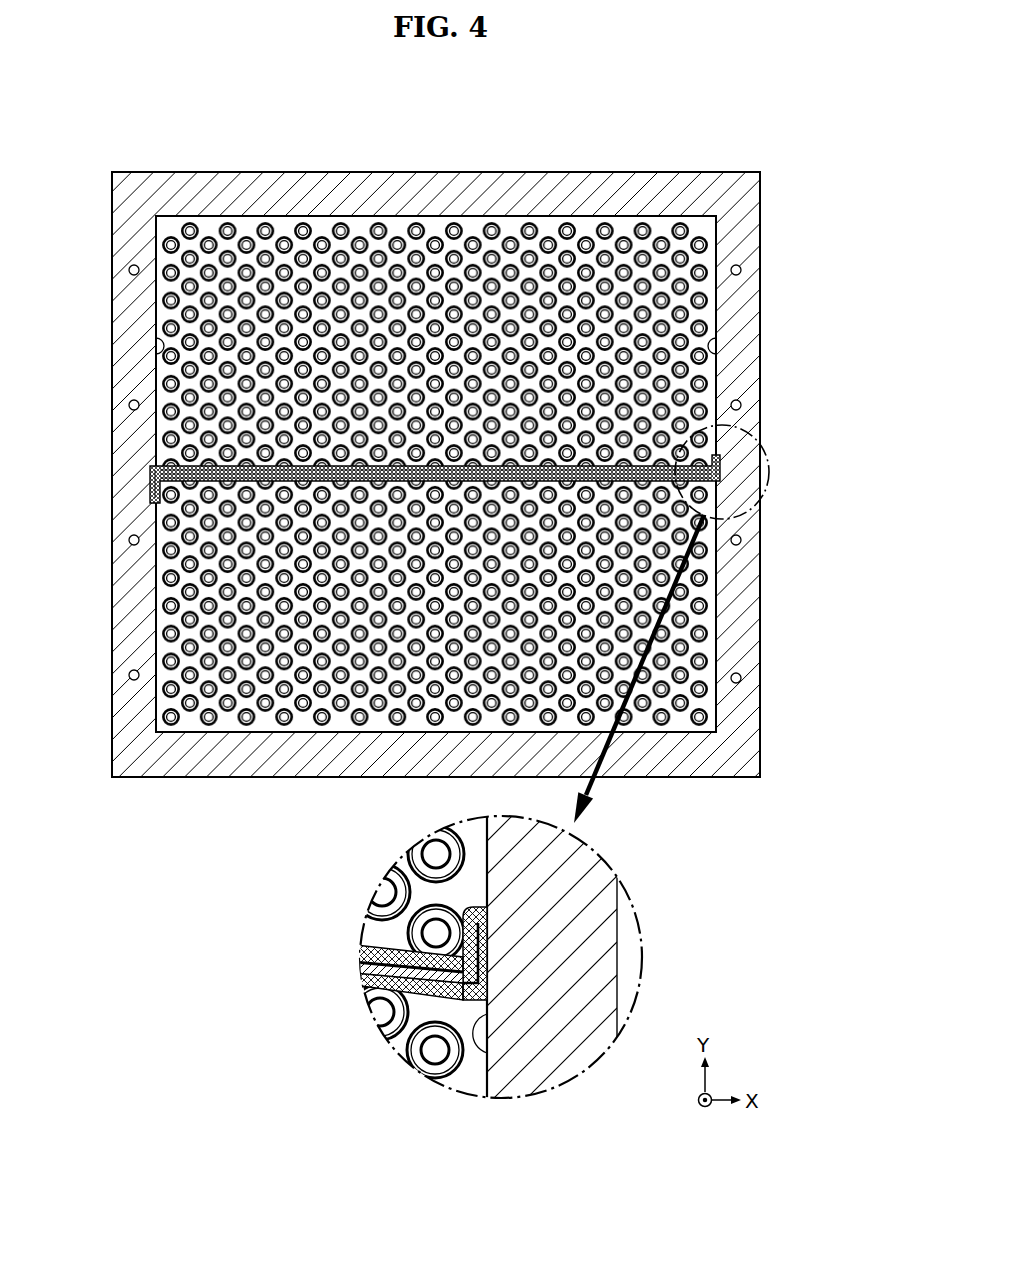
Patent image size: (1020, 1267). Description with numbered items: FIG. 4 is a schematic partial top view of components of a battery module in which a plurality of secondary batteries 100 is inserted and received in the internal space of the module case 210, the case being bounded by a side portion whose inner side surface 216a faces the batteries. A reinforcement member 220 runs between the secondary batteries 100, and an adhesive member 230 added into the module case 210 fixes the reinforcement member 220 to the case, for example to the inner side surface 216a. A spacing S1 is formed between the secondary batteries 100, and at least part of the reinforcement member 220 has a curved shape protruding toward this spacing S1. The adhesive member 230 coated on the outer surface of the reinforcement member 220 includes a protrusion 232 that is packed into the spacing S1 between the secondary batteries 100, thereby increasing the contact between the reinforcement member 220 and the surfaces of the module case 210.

The module case 210 is at (255, 120).
The inner side surface 216a is at (156, 346).
The adhesive member 230 is at (184, 459).
The secondary batteries 100 is at (227, 487).
The protrusion 232 is at (392, 907).
The spacing S1 is at (372, 935).
The reinforcement member 220 is at (381, 1008).